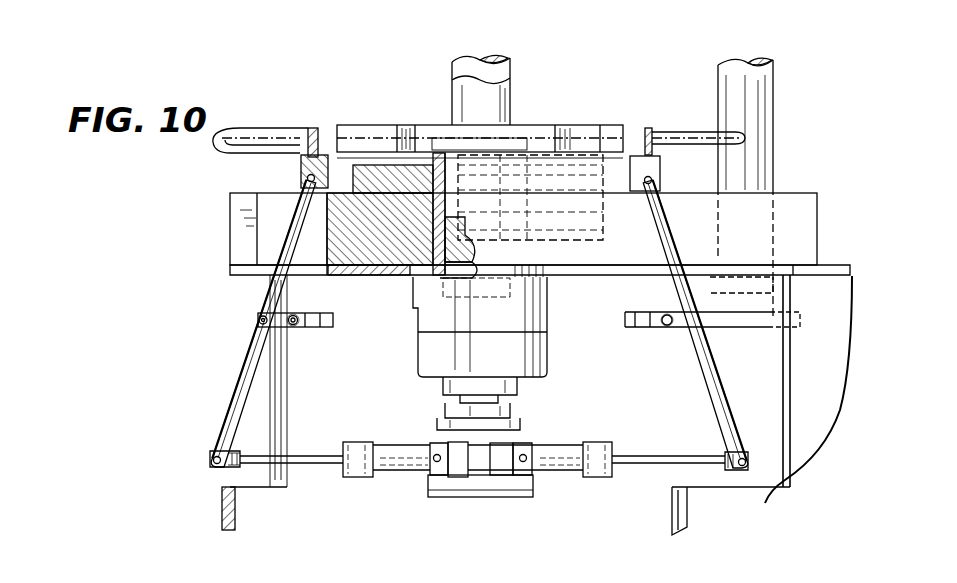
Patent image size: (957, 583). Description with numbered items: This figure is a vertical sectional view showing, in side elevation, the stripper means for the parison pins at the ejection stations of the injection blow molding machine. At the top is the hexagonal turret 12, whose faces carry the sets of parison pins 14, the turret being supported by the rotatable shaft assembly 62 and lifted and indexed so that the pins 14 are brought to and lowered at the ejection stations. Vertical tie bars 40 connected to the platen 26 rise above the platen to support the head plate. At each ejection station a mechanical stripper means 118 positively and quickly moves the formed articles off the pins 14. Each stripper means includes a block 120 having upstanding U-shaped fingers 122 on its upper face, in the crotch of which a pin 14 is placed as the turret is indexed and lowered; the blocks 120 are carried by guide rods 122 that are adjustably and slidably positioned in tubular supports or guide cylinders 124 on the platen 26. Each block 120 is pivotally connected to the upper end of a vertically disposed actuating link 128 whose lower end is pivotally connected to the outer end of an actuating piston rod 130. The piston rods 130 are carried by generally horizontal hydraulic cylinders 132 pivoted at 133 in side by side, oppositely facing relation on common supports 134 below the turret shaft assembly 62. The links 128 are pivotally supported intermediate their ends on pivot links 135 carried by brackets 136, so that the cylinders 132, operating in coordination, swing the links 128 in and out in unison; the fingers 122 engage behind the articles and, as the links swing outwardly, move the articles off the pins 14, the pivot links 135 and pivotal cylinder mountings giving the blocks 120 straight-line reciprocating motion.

The hexagonal turret 12 is at (538, 126).
The parison pins 14 is at (272, 128).
The platen 26 is at (588, 274).
The vertical tie bars 40 is at (462, 68).
The rotatable shaft assembly 62 is at (462, 103).
The mechanical stripper means 118 is at (313, 128).
The block 120 is at (305, 170).
The U-shaped fingers / guide rods 122 is at (216, 132).
The tubular supports or guide cylinders 124 is at (545, 195).
The actuating links 128 is at (232, 404).
The actuating piston rods 130 is at (318, 466).
The hydraulic cylinders 132 is at (400, 472).
The pivot 133 is at (435, 445).
The common supports 134 is at (503, 498).
The pivot links 135 is at (288, 328).
The brackets 136 is at (310, 330).